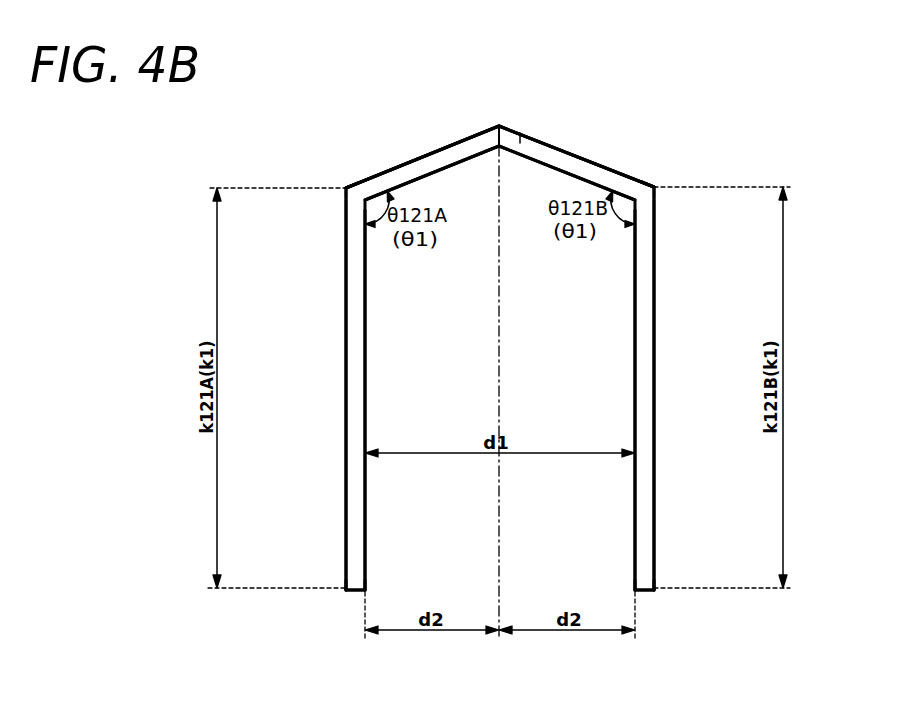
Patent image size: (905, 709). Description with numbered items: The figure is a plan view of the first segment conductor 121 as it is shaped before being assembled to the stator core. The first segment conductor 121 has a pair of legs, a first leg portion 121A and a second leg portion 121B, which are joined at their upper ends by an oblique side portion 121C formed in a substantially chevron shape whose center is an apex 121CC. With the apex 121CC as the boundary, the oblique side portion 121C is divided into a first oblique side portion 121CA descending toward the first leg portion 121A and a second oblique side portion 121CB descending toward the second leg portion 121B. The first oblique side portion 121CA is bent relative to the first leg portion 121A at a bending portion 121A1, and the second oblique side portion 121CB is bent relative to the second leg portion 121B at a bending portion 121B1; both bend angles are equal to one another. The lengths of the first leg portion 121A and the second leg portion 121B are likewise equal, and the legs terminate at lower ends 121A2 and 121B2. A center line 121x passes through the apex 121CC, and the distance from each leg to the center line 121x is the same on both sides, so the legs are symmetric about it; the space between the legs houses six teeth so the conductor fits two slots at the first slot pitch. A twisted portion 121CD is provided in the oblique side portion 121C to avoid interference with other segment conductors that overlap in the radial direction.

The first segment conductor 121 is at (615, 113).
The first leg portion 121A is at (345, 410).
The bending portion 121A1 is at (346, 188).
The lower end of first side plate portion 121A2 is at (346, 582).
The second leg portion 121B is at (657, 340).
The bending portion 121B1 is at (656, 188).
The lower end of second side plate portion 121B2 is at (655, 572).
The oblique side portion 121C is at (600, 63).
The first oblique side portion 121CA is at (424, 156).
The second oblique side portion 121CB is at (572, 157).
The apex 121CC is at (500, 124).
The twisted portion 121CD is at (514, 144).
The center line 121x is at (502, 555).